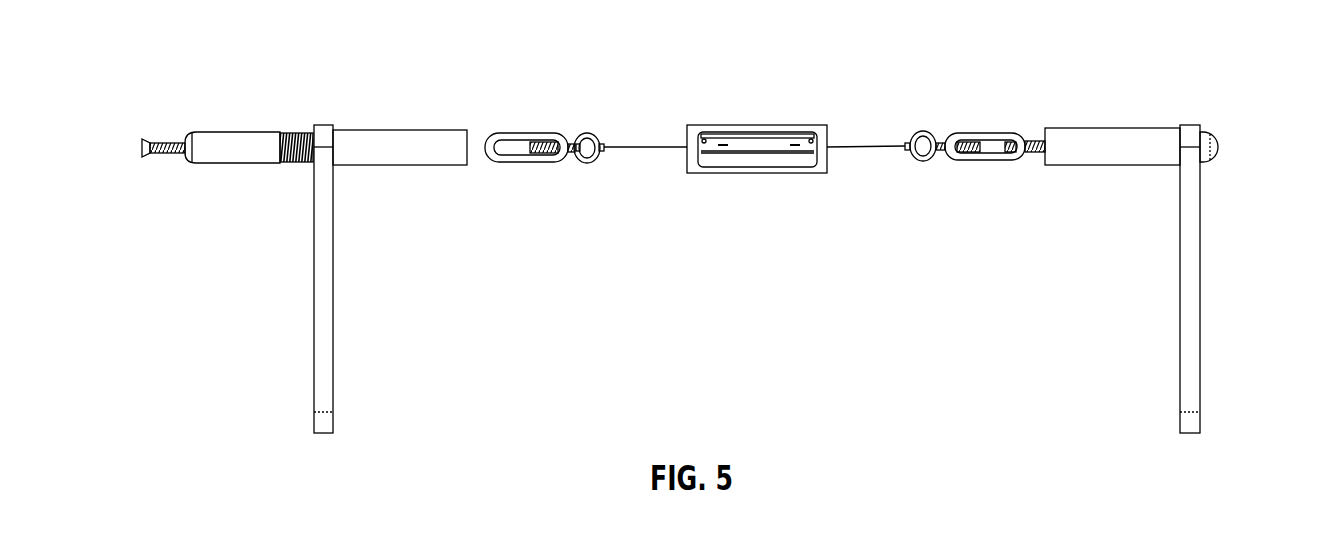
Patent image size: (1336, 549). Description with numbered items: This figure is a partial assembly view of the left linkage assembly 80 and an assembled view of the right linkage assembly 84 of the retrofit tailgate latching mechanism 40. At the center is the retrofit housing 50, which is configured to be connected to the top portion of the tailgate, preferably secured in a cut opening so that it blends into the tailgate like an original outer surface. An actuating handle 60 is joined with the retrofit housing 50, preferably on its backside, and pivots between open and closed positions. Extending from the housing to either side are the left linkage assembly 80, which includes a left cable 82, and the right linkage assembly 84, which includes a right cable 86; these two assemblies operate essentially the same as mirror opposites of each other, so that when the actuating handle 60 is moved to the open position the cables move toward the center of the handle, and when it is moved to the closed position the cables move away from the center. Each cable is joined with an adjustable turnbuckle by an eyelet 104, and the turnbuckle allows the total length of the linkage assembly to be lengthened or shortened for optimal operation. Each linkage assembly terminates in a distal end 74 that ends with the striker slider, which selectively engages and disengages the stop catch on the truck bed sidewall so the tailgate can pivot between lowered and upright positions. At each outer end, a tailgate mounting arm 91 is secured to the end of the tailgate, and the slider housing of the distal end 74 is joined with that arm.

The retrofit tailgate latching mechanism 40 is at (238, 53).
The distal end 74 is at (152, 191).
The tailgate mounting arm 91 is at (325, 322).
The left linkage assembly 80 is at (533, 93).
The eyelet 104 is at (589, 133).
The left cable 82 is at (645, 150).
The retrofit housing 50 is at (804, 125).
The actuating handle 60 is at (713, 160).
The right cable 86 is at (855, 148).
The right linkage assembly 84 is at (1024, 71).